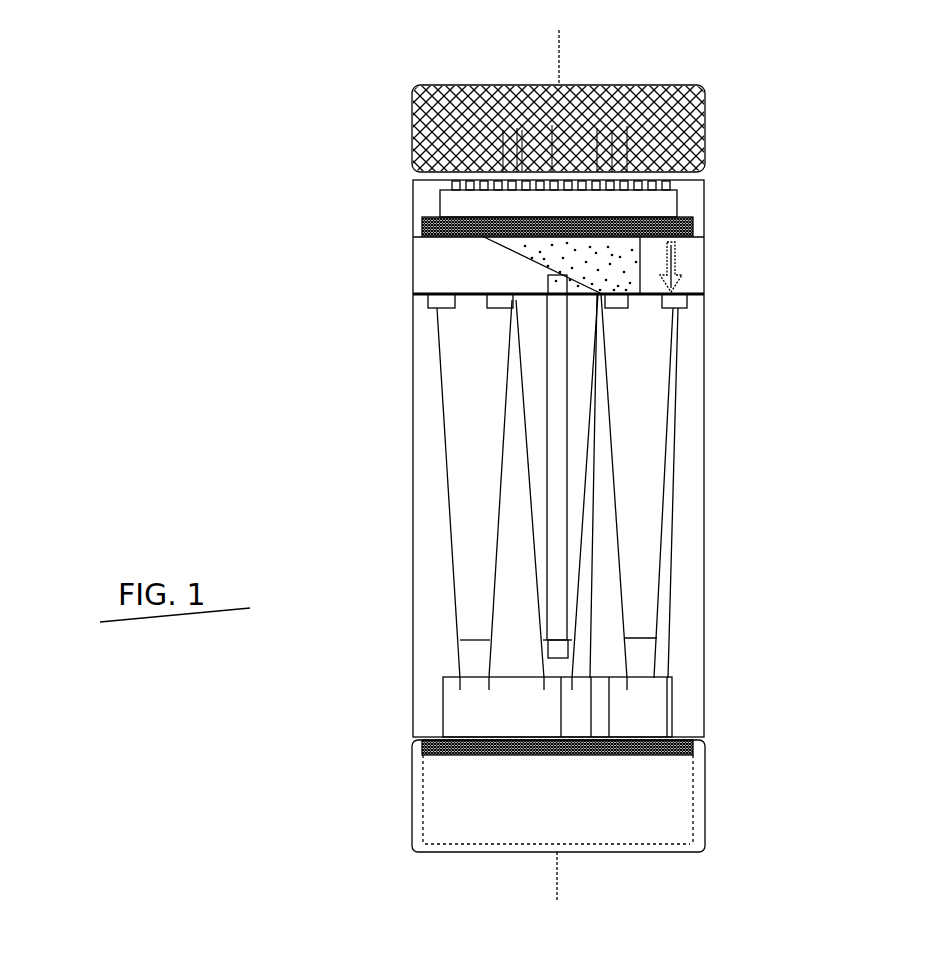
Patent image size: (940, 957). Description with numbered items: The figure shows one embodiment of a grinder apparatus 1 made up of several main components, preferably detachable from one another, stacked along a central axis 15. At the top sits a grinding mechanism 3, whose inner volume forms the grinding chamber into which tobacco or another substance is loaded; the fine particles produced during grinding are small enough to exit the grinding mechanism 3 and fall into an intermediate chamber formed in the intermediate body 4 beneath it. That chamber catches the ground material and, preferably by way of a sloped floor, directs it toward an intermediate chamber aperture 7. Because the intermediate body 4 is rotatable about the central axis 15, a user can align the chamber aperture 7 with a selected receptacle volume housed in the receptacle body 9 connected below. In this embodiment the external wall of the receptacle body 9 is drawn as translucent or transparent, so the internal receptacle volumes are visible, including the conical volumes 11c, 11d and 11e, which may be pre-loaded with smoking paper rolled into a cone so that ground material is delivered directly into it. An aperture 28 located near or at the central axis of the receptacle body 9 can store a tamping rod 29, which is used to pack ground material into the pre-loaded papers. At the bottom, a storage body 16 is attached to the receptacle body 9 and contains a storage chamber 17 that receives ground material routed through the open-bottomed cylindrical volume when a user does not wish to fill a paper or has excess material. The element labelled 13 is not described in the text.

The grinder apparatus 1 is at (770, 523).
The grinding mechanism 3 is at (708, 160).
The intermediate body 4 is at (704, 268).
The intermediate chamber aperture 7 is at (633, 296).
The receptacle body 9 is at (704, 588).
The conical receptacle volume 11c is at (463, 358).
The conical receptacle volume 11d is at (535, 378).
The conical receptacle volume 11e is at (647, 382).
The powder material 13 is at (630, 264).
The central axis 15 is at (565, 58).
The storage body 16 is at (705, 797).
The storage chamber 17 is at (600, 818).
The aperture 28 is at (611, 487).
The tamping rod 29 is at (559, 531).